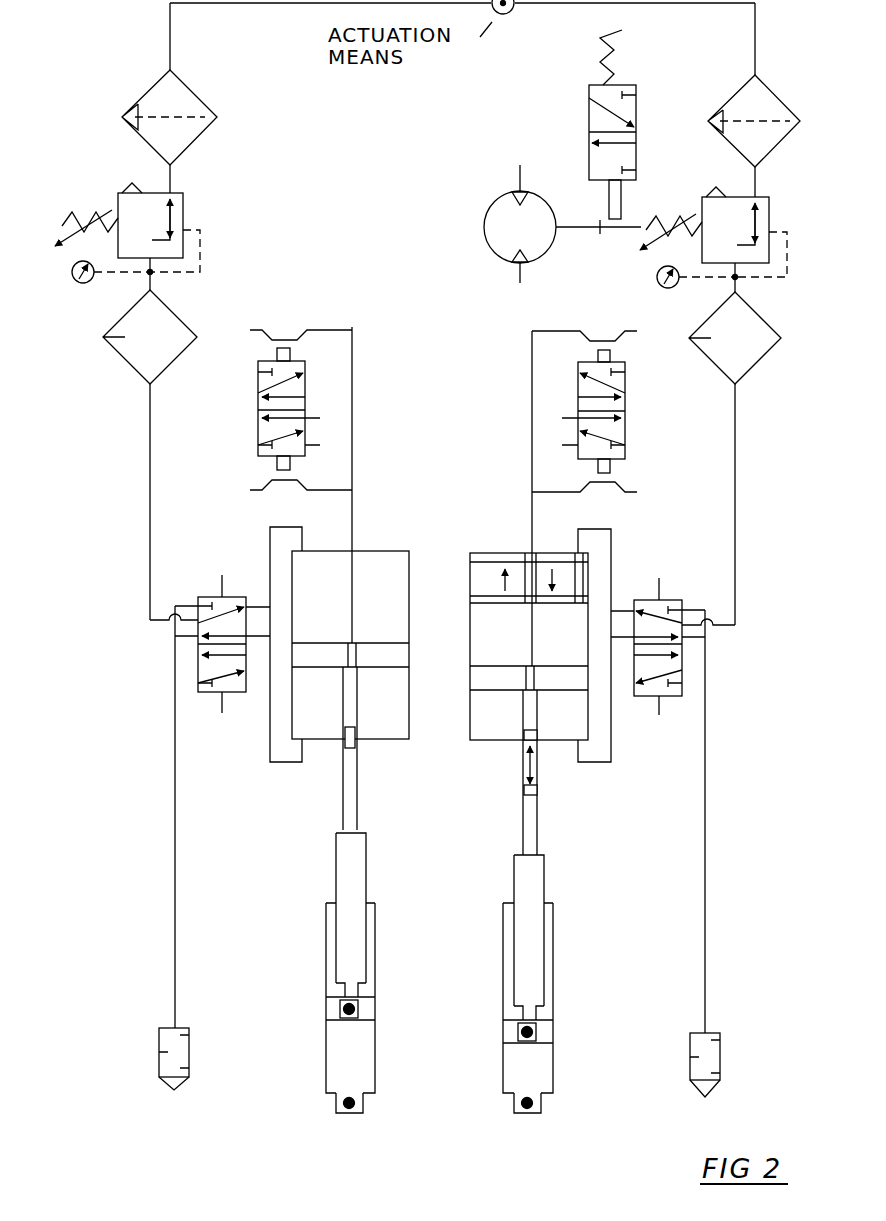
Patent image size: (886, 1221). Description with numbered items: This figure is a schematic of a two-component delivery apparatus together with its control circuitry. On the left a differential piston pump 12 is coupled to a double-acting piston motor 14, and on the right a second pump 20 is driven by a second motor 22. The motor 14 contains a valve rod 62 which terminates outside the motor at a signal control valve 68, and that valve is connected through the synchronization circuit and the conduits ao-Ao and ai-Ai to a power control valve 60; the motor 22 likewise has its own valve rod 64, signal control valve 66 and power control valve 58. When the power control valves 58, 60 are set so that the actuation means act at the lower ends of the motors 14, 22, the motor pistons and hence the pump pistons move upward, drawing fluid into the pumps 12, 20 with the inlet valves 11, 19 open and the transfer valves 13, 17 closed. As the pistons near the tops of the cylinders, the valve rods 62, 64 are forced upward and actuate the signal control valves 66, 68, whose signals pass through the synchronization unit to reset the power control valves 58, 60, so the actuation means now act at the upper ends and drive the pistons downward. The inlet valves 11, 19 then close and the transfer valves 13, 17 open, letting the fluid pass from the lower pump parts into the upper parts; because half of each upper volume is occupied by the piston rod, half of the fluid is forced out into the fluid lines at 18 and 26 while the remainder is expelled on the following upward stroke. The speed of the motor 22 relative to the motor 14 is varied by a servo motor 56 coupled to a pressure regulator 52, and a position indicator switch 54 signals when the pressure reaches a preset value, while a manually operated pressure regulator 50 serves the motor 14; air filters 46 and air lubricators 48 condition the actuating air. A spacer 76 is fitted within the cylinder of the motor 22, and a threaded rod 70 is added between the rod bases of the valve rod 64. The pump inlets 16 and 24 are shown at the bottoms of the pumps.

The inlet valve 11 is at (340, 1100).
The differential piston pump 12 is at (357, 993).
The transfer valve 13 is at (338, 1008).
The double-acting piston motor 14 is at (412, 676).
The first pump inlet 16 is at (349, 1122).
The transfer valve 17 is at (535, 1032).
The fluid line 18 is at (375, 903).
The inlet valve 19 is at (545, 1103).
The pump 20 is at (521, 1004).
The motor 22 is at (529, 687).
The second pump inlet 24 is at (527, 1122).
The fluid line 26 is at (503, 903).
The air filter 46 is at (137, 101).
The air lubricator 48 is at (125, 350).
The manually operated pressure regulator 50 is at (186, 211).
The pressure regulator 52 is at (772, 215).
The position indicator switch 54 is at (641, 156).
The servo motor 56 is at (485, 238).
The power control valve 58 is at (681, 602).
The power control valve 60 is at (200, 598).
The valve rod 62 is at (307, 485).
The valve rod 64 is at (576, 498).
The signal control valve 66 is at (628, 407).
The signal control valve 68 is at (258, 396).
The threaded rod 70 is at (522, 778).
The spacer 76 is at (505, 560).